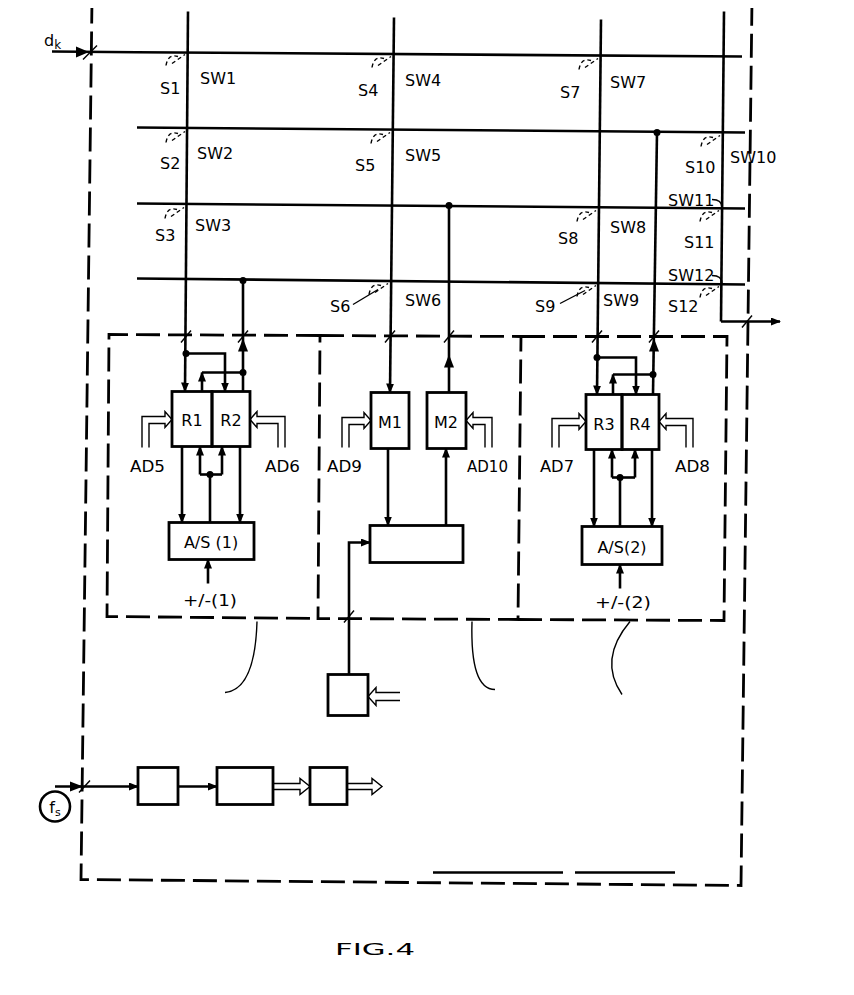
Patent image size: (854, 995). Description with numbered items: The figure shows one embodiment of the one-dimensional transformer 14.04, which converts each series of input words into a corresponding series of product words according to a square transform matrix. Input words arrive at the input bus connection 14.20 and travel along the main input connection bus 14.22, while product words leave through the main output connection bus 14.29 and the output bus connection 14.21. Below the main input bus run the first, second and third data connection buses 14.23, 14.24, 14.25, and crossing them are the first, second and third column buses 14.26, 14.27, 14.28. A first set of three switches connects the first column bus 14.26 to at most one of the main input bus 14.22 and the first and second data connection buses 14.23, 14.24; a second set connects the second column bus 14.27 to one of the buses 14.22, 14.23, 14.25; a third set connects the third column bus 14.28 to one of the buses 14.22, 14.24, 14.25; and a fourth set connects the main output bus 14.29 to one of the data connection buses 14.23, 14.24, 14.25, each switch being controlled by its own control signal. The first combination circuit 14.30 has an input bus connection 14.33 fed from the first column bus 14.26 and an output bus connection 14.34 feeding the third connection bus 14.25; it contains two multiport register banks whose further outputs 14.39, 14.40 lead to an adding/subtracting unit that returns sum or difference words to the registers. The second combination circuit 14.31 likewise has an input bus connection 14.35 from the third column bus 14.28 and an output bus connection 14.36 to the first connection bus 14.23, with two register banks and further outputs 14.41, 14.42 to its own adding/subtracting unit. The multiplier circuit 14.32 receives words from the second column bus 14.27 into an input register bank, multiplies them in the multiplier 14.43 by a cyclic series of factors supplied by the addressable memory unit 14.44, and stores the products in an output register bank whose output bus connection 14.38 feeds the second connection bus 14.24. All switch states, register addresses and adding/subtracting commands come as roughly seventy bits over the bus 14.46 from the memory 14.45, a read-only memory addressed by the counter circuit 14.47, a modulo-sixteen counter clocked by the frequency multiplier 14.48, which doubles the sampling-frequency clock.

The one-dimensional transformer 14.04 is at (645, 886).
The input bus connection 14.20 is at (85, 58).
The output bus connection 14.21 is at (742, 332).
The main input connection bus 14.22 is at (142, 52).
The first data connection bus 14.23 is at (142, 128).
The second data connection bus 14.24 is at (142, 204).
The third data connection bus 14.25 is at (142, 279).
The first column bus 14.26 is at (188, 30).
The second column bus 14.27 is at (394, 32).
The third column bus 14.28 is at (601, 32).
The main output connection bus 14.29 is at (724, 32).
The first combination circuit 14.30 is at (195, 623).
The second combination circuit 14.31 is at (612, 628).
The multiplier circuit 14.32 is at (462, 628).
The input bus connection 14.33 is at (186, 337).
The output bus connection 14.34 is at (245, 337).
The input bus connection 14.35 is at (596, 337).
The output bus connection 14.36 is at (654, 337).
The output bus connection 14.38 is at (450, 337).
The further output 14.39 is at (182, 496).
The further output 14.40 is at (243, 496).
The further output 14.41 is at (594, 498).
The further output 14.42 is at (654, 498).
The multiplier 14.43 is at (445, 563).
The memory unit 14.44 is at (327, 698).
The memory 14.45 is at (332, 806).
The bus 14.46 is at (359, 784).
The counter circuit 14.47 is at (248, 806).
The frequency multiplier 14.48 is at (163, 806).